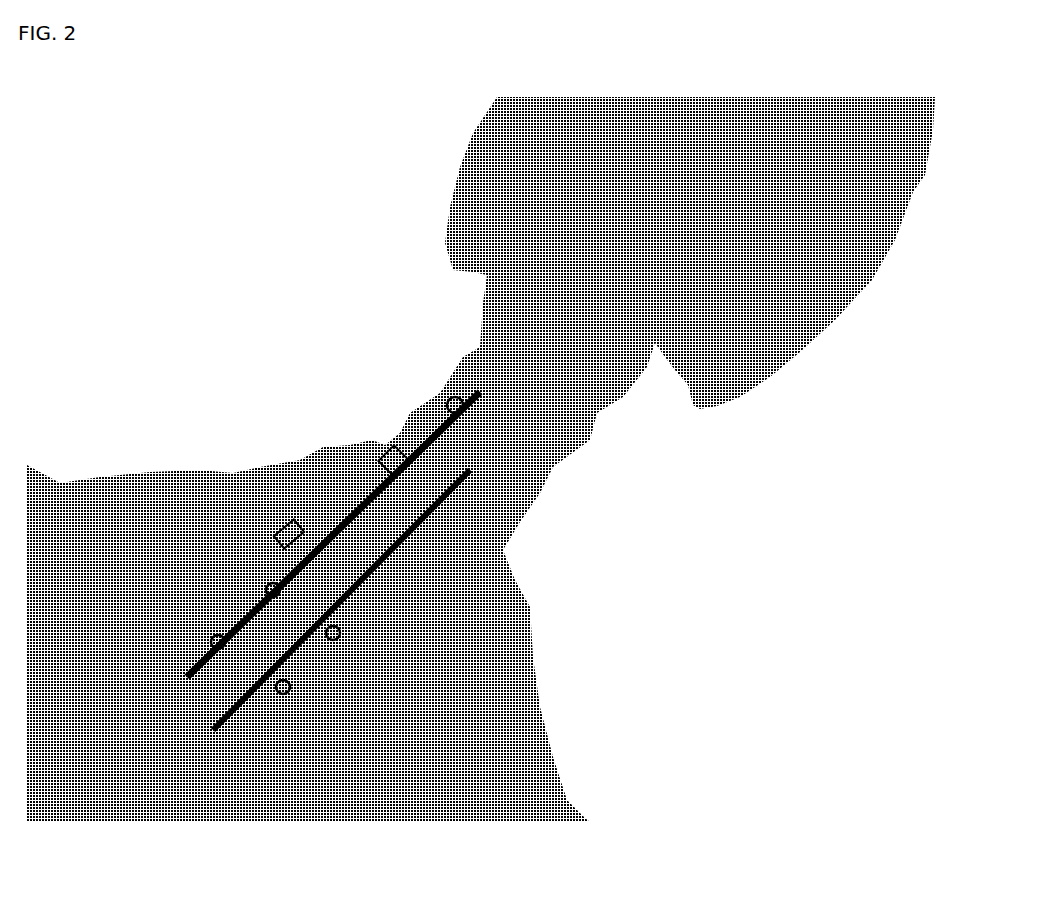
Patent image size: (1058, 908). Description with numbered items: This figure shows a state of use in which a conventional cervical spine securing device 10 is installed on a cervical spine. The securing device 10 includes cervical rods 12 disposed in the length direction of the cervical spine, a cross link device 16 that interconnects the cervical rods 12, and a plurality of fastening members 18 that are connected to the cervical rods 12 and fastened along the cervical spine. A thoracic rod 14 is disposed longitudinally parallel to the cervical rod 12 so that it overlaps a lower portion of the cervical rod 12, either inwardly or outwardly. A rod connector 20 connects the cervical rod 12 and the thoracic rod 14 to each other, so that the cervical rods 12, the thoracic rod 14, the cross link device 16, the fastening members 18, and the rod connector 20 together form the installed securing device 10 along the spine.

The cervical spine securing device 10 is at (674, 296).
The cervical rod 12 is at (320, 517).
The thoracic rod 14 is at (290, 570).
The cross link device 16 is at (393, 460).
The fastening member 18 is at (453, 407).
The rod connector 20 is at (268, 527).